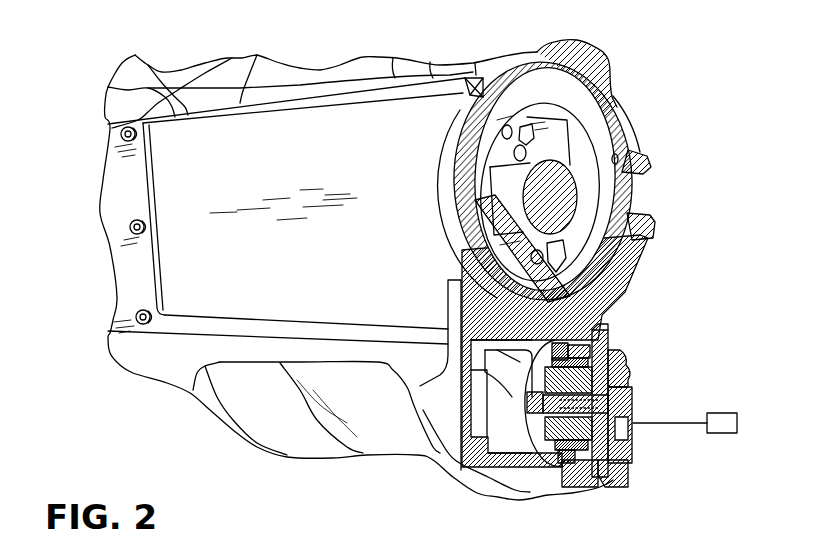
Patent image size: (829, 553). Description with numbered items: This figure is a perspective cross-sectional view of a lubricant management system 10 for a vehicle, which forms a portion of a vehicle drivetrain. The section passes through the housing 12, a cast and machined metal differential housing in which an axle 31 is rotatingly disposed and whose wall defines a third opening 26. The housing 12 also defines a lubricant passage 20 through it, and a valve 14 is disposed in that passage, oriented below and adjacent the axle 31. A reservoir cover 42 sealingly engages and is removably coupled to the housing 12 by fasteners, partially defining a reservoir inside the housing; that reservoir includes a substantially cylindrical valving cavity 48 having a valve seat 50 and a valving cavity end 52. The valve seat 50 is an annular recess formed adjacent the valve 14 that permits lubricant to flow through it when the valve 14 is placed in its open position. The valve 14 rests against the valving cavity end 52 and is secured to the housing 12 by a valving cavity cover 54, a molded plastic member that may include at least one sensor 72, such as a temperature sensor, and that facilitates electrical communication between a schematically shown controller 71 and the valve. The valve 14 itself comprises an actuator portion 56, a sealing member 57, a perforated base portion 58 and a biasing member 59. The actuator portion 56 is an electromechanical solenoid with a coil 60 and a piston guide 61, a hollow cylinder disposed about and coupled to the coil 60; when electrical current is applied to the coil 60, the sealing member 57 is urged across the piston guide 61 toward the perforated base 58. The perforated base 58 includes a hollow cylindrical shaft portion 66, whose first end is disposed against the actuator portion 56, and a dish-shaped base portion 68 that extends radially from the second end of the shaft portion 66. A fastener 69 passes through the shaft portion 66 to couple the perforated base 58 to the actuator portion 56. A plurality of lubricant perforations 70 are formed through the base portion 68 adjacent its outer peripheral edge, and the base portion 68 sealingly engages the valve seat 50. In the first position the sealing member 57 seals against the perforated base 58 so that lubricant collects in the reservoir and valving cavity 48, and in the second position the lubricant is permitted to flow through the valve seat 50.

The lubricant management system 10 is at (640, 82).
The housing 12 is at (303, 75).
The valve 14 is at (637, 368).
The lubricant passage 20 is at (393, 174).
The third opening 26 is at (628, 153).
The axle 31 is at (580, 190).
The reservoir cover 42 is at (150, 290).
The valving cavity 48 is at (530, 340).
The valve seat 50 is at (570, 467).
The valving cavity end 52 is at (615, 476).
The valving cavity cover 54 is at (637, 434).
The actuator portion 56 is at (603, 350).
The sealing member 57 is at (570, 347).
The perforated base portion 58 is at (543, 452).
The biasing member 59 is at (583, 460).
The coil 60 is at (592, 380).
The piston guide 61 is at (632, 318).
The shaft portion 66 is at (611, 404).
The base portion 68 is at (527, 420).
The fastener 69 is at (527, 380).
The lubricant perforations 70 is at (560, 453).
The controller 71 is at (720, 412).
The sensor 72 is at (630, 452).